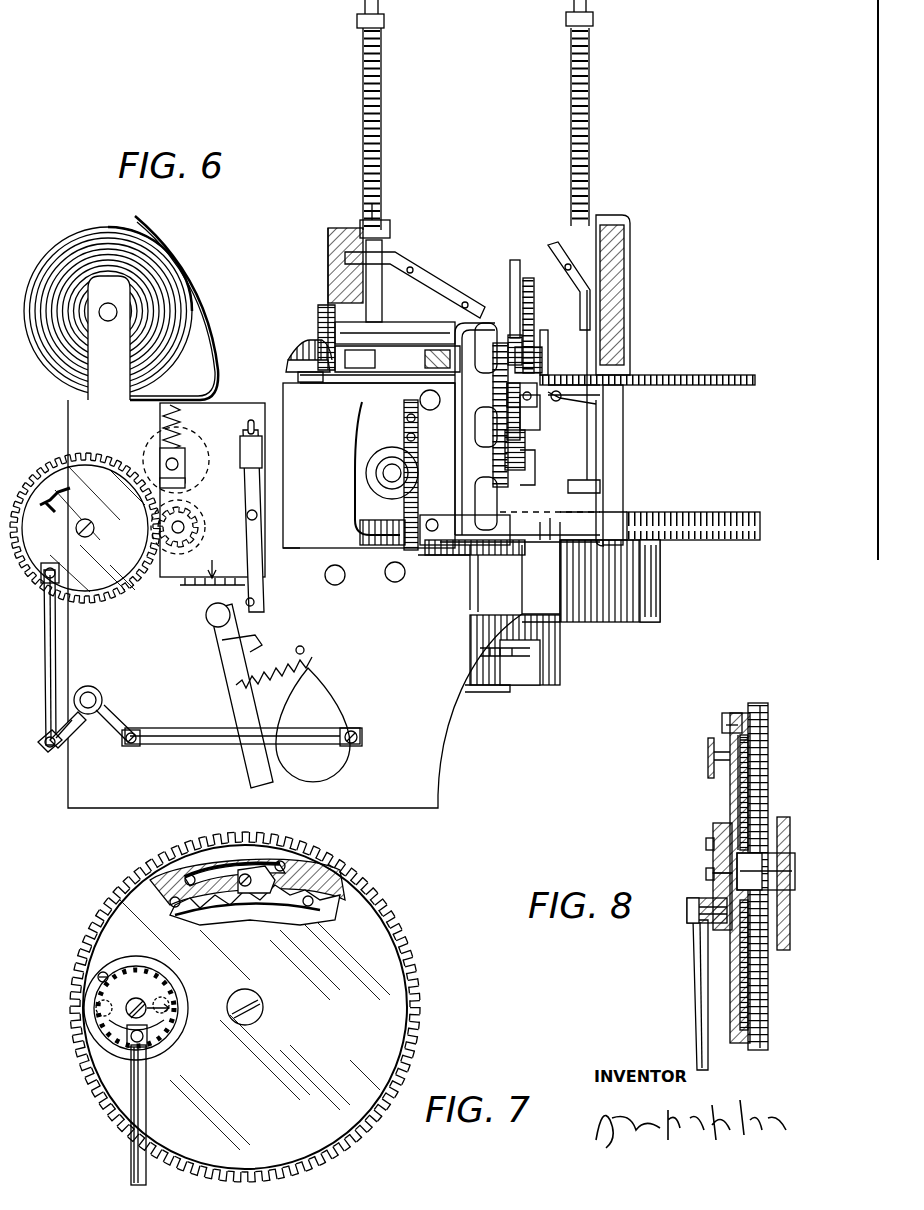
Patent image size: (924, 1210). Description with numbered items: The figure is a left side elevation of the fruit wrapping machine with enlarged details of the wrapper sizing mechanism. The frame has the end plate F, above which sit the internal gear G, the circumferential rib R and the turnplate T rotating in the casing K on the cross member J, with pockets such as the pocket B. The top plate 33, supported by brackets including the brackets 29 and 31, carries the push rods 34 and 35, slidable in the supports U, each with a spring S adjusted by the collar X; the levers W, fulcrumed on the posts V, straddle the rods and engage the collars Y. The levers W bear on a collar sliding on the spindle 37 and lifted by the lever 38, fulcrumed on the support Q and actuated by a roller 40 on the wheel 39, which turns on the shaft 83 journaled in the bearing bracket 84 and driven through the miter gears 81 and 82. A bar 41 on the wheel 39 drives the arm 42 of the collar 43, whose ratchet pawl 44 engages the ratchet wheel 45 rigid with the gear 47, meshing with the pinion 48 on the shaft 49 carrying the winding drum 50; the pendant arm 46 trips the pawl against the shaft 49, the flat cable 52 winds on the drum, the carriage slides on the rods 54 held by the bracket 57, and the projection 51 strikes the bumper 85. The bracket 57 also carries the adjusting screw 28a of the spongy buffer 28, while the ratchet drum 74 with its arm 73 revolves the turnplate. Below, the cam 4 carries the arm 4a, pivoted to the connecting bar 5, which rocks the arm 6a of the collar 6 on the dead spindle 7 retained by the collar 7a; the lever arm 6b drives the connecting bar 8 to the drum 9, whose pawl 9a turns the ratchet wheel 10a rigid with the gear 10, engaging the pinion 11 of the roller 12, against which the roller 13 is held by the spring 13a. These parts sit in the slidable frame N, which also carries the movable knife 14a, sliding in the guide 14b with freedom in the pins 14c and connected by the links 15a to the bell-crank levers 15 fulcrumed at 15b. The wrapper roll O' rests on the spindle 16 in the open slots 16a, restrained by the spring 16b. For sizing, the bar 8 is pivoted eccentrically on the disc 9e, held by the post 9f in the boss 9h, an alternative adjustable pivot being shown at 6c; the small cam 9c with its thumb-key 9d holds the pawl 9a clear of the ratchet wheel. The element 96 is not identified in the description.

In FIG. 6, the wrapper roll O' is at (108, 302).
In FIG. 6, the spindle 16 is at (112, 316).
In FIG. 6, the open slots 16a is at (104, 315).
In FIG. 6, the spring 16b is at (212, 330).
In FIG. 6, the roller 13 is at (150, 450).
In FIG. 6, the spring 13a is at (160, 420).
In FIG. 6, the frame N is at (217, 462).
In FIG. 8, the frame N is at (780, 816).
In FIG. 6, the roller 12 is at (200, 505).
In FIG. 7, the roller 12 is at (160, 962).
In FIG. 6, the pinion 11 is at (195, 536).
In FIG. 7, the pinion 11 is at (190, 984).
In FIG. 6, the gear 10 is at (58, 462).
In FIG. 7, the gear 10 is at (372, 882).
In FIG. 8, the gear 10 is at (768, 748).
In FIG. 6, the drum 9 is at (99, 530).
In FIG. 7, the drum 9 is at (160, 1040).
In FIG. 8, the drum 9 is at (732, 972).
In FIG. 6, the thumb-key 9d is at (48, 508).
In FIG. 8, the thumb-key 9d is at (708, 755).
In FIG. 6, the knife bar 14a is at (260, 460).
In FIG. 6, the guide 14b is at (256, 426).
In FIG. 6, the pins 14c is at (240, 450).
In FIG. 6, the levers 15 is at (235, 710).
In FIG. 6, the links 15a is at (310, 580).
In FIG. 6, the fulcrum 15b is at (216, 620).
In FIG. 6, the holes 96 is at (380, 596).
In FIG. 6, the cam 4 is at (313, 725).
In FIG. 6, the arm 4a is at (362, 740).
In FIG. 6, the connecting bar 5 is at (228, 744).
In FIG. 6, the collar 6 is at (88, 686).
In FIG. 6, the rocker arm 6a is at (128, 728).
In FIG. 6, the lever arm 6b is at (74, 735).
In FIG. 6, the adjustable pivot 6c is at (50, 755).
In FIG. 6, the dead spindle 7 is at (96, 690).
In FIG. 6, the collar 7a is at (118, 712).
In FIG. 6, the connecting bar 8 is at (44, 640).
In FIG. 7, the connecting bar 8 is at (130, 1146).
In FIG. 8, the connecting bar 8 is at (693, 990).
In FIG. 6, the bracket 29 is at (283, 398).
In FIG. 6, the bracket 57 is at (372, 402).
In FIG. 6, the buffer 28 is at (372, 492).
In FIG. 6, the adjusting screw 28a is at (376, 472).
In FIG. 6, the winding drum 50 is at (382, 518).
In FIG. 6, the flat cable 52 is at (418, 445).
In FIG. 6, the paired rods 54 is at (430, 410).
In FIG. 6, the bumper 85 is at (435, 520).
In FIG. 6, the projection 51 is at (428, 555).
In FIG. 6, the support Q is at (520, 432).
In FIG. 6, the collar Y is at (450, 299).
In FIG. 6, the supports U is at (463, 209).
In FIG. 6, the levers W is at (444, 280).
In FIG. 6, the shaft 83 is at (420, 328).
In FIG. 6, the bearing bracket 84 is at (440, 362).
In FIG. 6, the miter gear 82 is at (322, 318).
In FIG. 6, the miter gear 81 is at (304, 342).
In FIG. 6, the push rod 35 is at (382, 132).
In FIG. 6, the push rod 34 is at (590, 126).
In FIG. 6, the spring S is at (382, 82).
In FIG. 6, the collar X is at (384, 21).
In FIG. 6, the top plate 33 is at (660, 375).
In FIG. 6, the posts V is at (550, 330).
In FIG. 6, the bracket 31 is at (622, 482).
In FIG. 6, the turnplate T is at (668, 510).
In FIG. 6, the rib R is at (732, 512).
In FIG. 6, the internal gear G is at (695, 540).
In FIG. 6, the pocket B is at (610, 580).
In FIG. 6, the ratchet drum 74 is at (515, 650).
In FIG. 6, the casing K is at (539, 593).
In FIG. 6, the cross member J is at (485, 650).
In FIG. 6, the arm 73 is at (470, 692).
In FIG. 6, the end plate F is at (295, 604).
In FIG. 6, the vertical spindle 37 is at (513, 262).
In FIG. 6, the lever 38 is at (518, 340).
In FIG. 6, the wheel 39 is at (530, 278).
In FIG. 6, the roller 40 is at (542, 362).
In FIG. 6, the bar 41 is at (548, 358).
In FIG. 6, the arm 42 is at (596, 400).
In FIG. 6, the collar 43 is at (598, 392).
In FIG. 6, the ratchet pawl 44 is at (516, 432).
In FIG. 6, the ratchet wheel 45 is at (537, 412).
In FIG. 6, the pendant arm 46 is at (528, 456).
In FIG. 6, the gear 47 is at (540, 446).
In FIG. 6, the pinion 48 is at (490, 472).
In FIG. 6, the shaft 49 is at (520, 485).
In FIG. 7, the ratchet wheel 10a is at (330, 905).
In FIG. 8, the ratchet wheel 10a is at (742, 800).
In FIG. 7, the ratchet pawl 9a is at (228, 880).
In FIG. 8, the ratchet pawl 9a is at (742, 720).
In FIG. 7, the cam 9c is at (250, 890).
In FIG. 8, the cam 9c is at (722, 728).
In FIG. 7, the disc 9e is at (136, 1008).
In FIG. 8, the disc 9e is at (710, 865).
In FIG. 7, the post 9f is at (102, 972).
In FIG. 8, the post 9f is at (706, 845).
In FIG. 7, the boss 9h is at (112, 1050).
In FIG. 8, the boss 9h is at (718, 830).